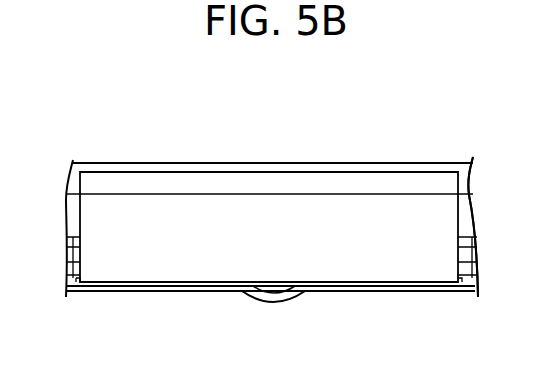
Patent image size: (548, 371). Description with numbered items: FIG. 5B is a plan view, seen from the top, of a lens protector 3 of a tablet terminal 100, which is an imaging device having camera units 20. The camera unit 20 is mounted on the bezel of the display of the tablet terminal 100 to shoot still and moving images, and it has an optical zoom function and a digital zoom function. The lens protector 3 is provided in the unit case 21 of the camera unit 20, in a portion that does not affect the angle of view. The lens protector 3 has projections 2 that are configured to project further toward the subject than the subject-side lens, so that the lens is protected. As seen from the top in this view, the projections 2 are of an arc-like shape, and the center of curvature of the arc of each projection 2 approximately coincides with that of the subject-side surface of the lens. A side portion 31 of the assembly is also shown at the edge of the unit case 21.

The tablet terminal 100 is at (416, 146).
The camera unit 20 is at (306, 158).
The unit case 21 is at (217, 163).
The side wall 31 is at (472, 159).
The projection 2 is at (256, 300).
The lens protector 3 is at (290, 301).